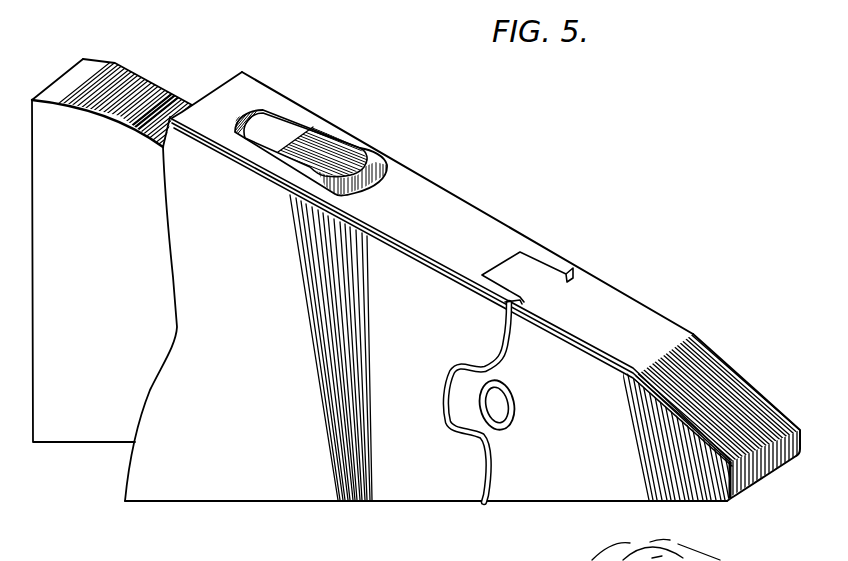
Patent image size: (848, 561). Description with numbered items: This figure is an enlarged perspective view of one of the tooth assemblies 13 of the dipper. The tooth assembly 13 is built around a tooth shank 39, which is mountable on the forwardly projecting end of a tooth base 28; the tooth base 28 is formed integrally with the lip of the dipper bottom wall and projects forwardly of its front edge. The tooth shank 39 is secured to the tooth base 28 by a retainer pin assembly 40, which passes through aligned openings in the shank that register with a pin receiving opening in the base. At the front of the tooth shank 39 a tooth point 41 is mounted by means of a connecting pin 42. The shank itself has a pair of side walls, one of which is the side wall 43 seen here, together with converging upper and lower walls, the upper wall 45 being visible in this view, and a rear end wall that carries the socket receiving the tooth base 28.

The tooth assembly 13 is at (609, 188).
The tooth base member 28 is at (138, 57).
The tooth shank 39 is at (459, 192).
The retainer pin assembly 40 is at (352, 138).
The tooth point 41 is at (652, 310).
The connecting pin 42 is at (513, 407).
The side wall 43 is at (265, 483).
The upper wall 45 is at (470, 233).